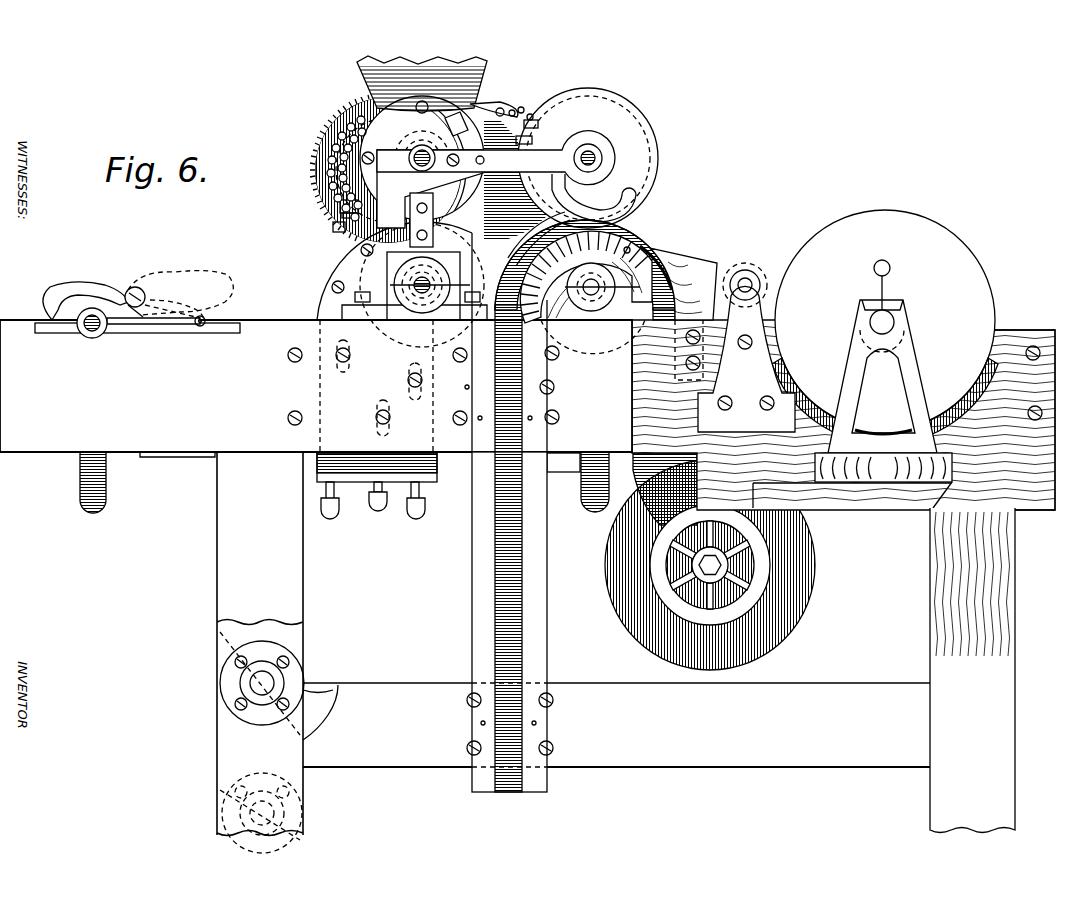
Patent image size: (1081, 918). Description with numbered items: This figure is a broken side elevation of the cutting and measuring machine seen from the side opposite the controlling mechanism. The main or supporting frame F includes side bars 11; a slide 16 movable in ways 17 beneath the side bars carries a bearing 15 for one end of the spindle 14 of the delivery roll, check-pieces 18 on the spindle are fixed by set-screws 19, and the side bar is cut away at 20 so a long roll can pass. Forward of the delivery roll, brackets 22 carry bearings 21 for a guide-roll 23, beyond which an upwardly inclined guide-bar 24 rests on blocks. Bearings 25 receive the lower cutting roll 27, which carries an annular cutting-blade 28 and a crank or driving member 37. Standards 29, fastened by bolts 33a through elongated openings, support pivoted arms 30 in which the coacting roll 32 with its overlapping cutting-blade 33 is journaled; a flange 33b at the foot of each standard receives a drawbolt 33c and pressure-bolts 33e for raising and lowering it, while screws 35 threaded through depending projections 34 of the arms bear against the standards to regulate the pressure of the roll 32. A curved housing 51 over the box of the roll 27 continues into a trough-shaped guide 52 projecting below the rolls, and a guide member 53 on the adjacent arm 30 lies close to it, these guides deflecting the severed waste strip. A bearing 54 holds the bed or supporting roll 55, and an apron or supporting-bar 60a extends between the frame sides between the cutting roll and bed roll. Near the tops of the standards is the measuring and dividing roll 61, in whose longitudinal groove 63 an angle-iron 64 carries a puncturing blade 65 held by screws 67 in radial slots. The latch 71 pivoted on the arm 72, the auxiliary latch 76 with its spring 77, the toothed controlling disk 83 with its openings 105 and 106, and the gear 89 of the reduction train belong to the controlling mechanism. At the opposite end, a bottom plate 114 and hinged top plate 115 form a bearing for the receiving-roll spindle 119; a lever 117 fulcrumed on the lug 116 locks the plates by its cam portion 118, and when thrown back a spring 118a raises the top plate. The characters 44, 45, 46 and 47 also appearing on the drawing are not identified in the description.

The side bars 11 is at (350, 416).
The spindle 14 is at (896, 325).
The bearing 15 is at (915, 380).
The slide 16 is at (882, 507).
The ways 17 is at (918, 523).
The check-pieces 18 is at (885, 327).
The set-screws 19 is at (890, 272).
The cut-away portion 20 is at (998, 328).
The bearings 21 is at (743, 278).
The brackets 22 is at (735, 359).
The guide-roll 23 is at (760, 267).
The guide-bar 24 is at (693, 267).
The bearings 25 is at (640, 318).
The roll 27 is at (667, 258).
The annular cutting-blade 28 is at (648, 225).
The standards 29 is at (300, 308).
The arms 30 is at (496, 158).
The coacting roll 32 is at (643, 140).
The cutting-blade 33 is at (660, 173).
The bolts 33a is at (382, 408).
The flange 33b is at (432, 488).
The drawbolt 33c is at (379, 510).
The pressure-bolt 33e is at (420, 518).
The depending projections 34 is at (337, 227).
The screws 35 is at (363, 263).
The crank or driving member 37 is at (592, 512).
The spoked wheel rim 44 is at (757, 534).
The hub 45 is at (722, 565).
The wheel portion 46 is at (665, 489).
The wheel 47 is at (805, 610).
The curved housing 51 is at (585, 252).
The trough-shaped guide 52 is at (500, 560).
The guide member 53 is at (628, 195).
The bearing 54 is at (390, 285).
The bed or supporting roll 55 is at (350, 355).
The apron or supporting-bar 60a is at (576, 270).
The measuring and dividing roll 61 is at (365, 122).
The longitudinal groove 63 is at (422, 84).
The angle-iron 64 is at (435, 128).
The blade 65 is at (480, 105).
The screws 67 is at (453, 122).
The latch 71 is at (530, 123).
The arm 72 is at (520, 140).
The auxiliary latch 76 is at (523, 113).
The spring 77 is at (510, 98).
The controlling member or disk 83 is at (320, 163).
The gear 89 is at (538, 115).
The openings 105 is at (333, 187).
The openings 106 is at (338, 150).
The bottom plate 114 is at (145, 333).
The top plate 115 is at (143, 317).
The lug 116 is at (120, 317).
The lever 117 is at (229, 280).
The cam portion 118 is at (123, 290).
The spring 118a is at (170, 337).
The spindle 119 is at (88, 332).
The main or supporting frame F is at (985, 670).